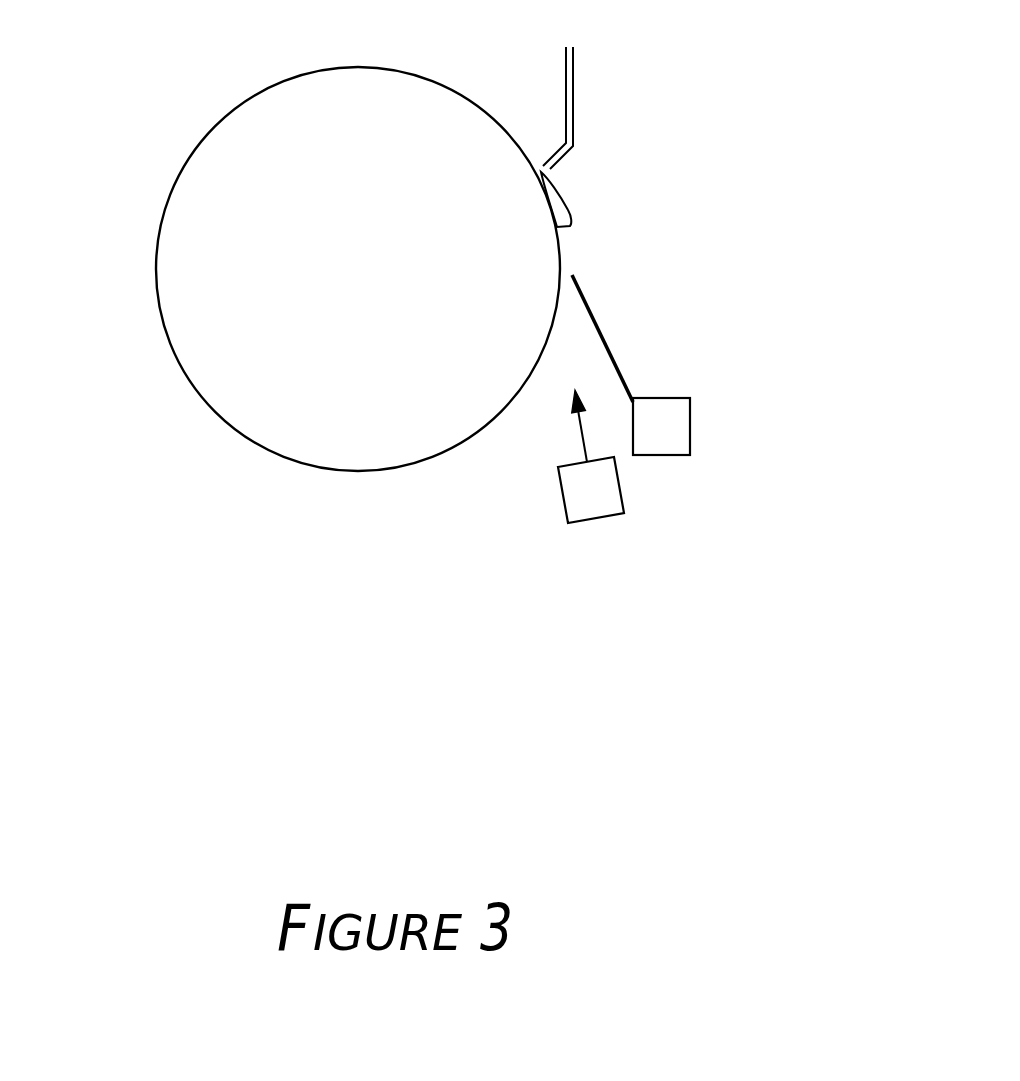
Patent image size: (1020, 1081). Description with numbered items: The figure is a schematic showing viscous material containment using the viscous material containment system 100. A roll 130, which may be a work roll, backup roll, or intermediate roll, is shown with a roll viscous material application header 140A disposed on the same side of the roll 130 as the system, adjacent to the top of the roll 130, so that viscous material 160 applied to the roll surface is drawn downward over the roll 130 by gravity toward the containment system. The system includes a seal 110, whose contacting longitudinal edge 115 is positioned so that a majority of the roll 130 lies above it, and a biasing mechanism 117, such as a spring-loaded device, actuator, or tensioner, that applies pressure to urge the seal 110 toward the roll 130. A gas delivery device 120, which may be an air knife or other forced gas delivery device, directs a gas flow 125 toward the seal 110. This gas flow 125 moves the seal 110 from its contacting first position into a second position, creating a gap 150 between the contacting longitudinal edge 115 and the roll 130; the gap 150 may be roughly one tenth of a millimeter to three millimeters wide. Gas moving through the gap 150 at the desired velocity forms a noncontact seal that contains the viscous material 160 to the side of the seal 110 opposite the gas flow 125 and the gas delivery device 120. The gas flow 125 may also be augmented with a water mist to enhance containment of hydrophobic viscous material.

The viscous material containment system 100 is at (764, 61).
The seal 110 is at (628, 385).
The contacting longitudinal edge 115 is at (573, 272).
The biasing mechanism 117 is at (673, 440).
The gas delivery device 120 is at (608, 493).
The gas flow 125 is at (565, 434).
The roll 130 is at (159, 228).
The roll viscous material application header 140A is at (575, 63).
The gap 150 is at (566, 264).
The viscous material 160 is at (567, 202).